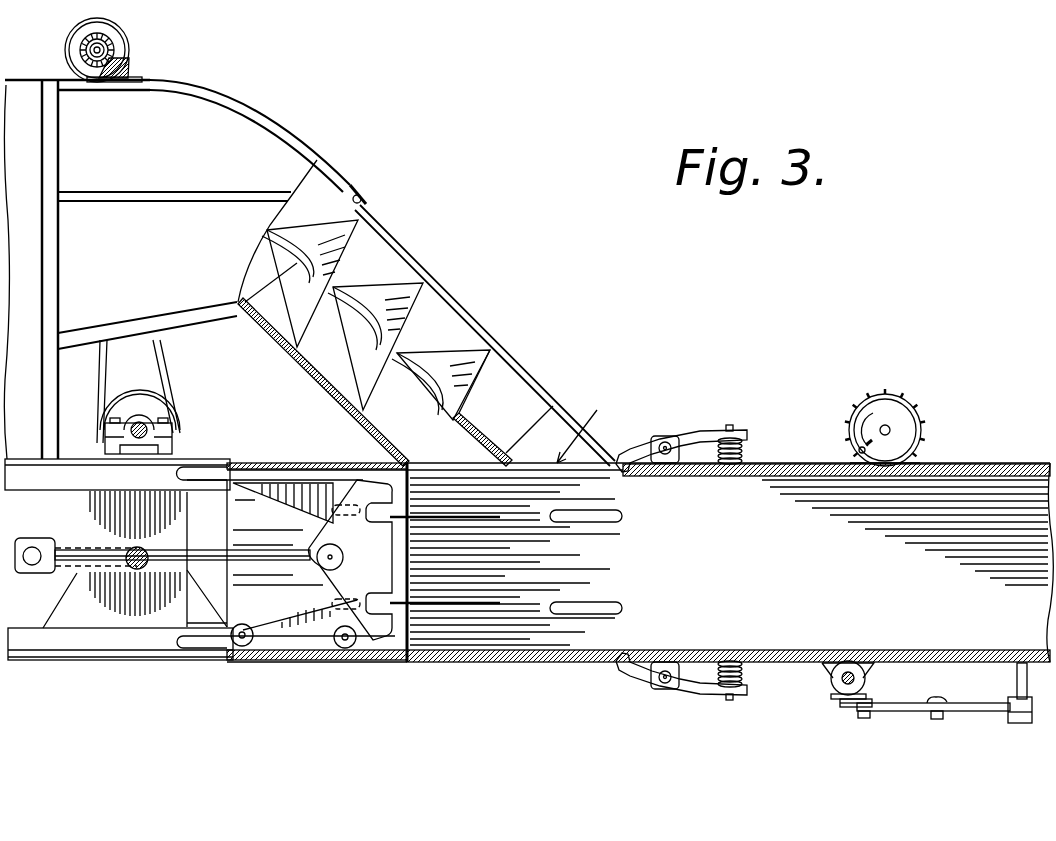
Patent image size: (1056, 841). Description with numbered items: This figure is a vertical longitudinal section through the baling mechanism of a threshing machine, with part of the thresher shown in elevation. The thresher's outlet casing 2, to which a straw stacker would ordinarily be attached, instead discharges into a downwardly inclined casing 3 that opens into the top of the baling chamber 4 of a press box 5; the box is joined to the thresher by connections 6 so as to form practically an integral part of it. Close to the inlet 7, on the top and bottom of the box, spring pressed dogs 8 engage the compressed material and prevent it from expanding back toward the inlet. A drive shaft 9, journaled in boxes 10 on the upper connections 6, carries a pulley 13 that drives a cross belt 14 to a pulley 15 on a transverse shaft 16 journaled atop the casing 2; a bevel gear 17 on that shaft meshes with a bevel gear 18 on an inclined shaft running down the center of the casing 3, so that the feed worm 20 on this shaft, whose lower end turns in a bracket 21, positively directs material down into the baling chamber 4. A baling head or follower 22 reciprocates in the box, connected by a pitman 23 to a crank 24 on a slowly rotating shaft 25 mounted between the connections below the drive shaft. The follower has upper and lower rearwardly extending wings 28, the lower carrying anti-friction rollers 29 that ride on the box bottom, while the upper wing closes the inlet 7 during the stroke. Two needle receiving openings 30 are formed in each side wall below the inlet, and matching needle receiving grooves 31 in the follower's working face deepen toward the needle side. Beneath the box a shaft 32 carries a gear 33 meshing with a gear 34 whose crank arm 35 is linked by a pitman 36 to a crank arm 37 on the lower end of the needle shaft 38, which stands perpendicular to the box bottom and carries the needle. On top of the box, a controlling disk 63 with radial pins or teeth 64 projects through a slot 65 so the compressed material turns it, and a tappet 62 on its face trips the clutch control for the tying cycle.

The outlet casing 2 is at (257, 105).
The downwardly inclined casing 3 is at (477, 318).
The baling chamber 4 is at (540, 617).
The press box 5 is at (763, 460).
The connections 6 is at (62, 467).
The inlet 7 is at (585, 423).
The spring pressed dogs 8 is at (683, 433).
The drive shaft 9 is at (145, 426).
The boxes 10 is at (270, 243).
The pulley 13 is at (127, 392).
The cross belt 14 is at (163, 353).
The pulley 15 is at (72, 63).
The transverse shaft 16 is at (80, 50).
The bevel gear 17 is at (108, 45).
The bevel gear 18 is at (114, 62).
The feed worm 20 is at (403, 297).
The bracket 21 is at (477, 408).
The baling head or follower 22 is at (400, 635).
The pitman 23 is at (243, 552).
The crank 24 is at (66, 548).
The shaft 25 is at (144, 551).
The rearwardly extending wings 28 is at (254, 472).
The anti-friction rollers 29 is at (243, 626).
The needle receiving openings 30 is at (613, 551).
The needle receiving grooves 31 is at (382, 600).
The shaft 32 is at (850, 675).
The gear 33 is at (863, 682).
The gear 34 is at (833, 697).
The crank arm 35 is at (860, 708).
The pitman 36 is at (913, 713).
The crank arm 37 is at (1000, 715).
The needle shaft 38 is at (1017, 683).
The tappet 62 is at (853, 447).
The controlling disk 63 is at (893, 403).
The pins or teeth 64 is at (930, 432).
The slot 65 is at (913, 467).